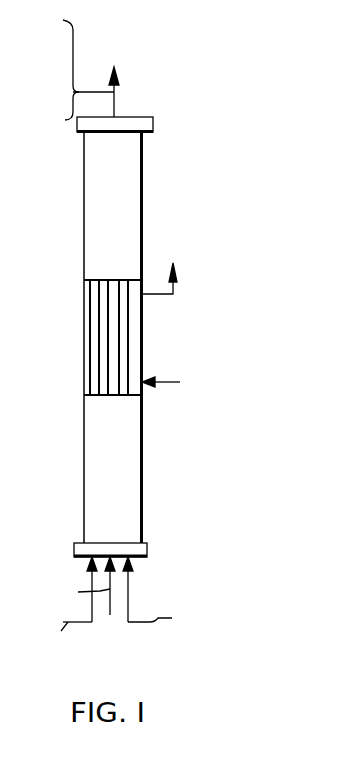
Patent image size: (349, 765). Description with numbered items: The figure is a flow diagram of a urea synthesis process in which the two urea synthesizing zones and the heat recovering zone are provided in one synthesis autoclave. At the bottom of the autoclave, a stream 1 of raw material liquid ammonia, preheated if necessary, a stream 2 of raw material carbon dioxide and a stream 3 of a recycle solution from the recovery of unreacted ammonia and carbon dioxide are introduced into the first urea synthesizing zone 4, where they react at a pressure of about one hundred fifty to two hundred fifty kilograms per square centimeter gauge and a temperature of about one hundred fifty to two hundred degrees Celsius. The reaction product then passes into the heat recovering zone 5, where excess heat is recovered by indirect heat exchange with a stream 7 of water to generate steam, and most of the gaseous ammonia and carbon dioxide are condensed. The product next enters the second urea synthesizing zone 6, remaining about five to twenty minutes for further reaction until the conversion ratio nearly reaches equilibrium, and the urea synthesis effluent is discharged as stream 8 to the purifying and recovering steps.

The stream of raw material liquid ammonia 1 is at (78, 625).
The stream of raw material carbon dioxide 2 is at (112, 615).
The stream of recycle solution 3 is at (145, 625).
The first urea synthesizing zone 4 is at (142, 478).
The heat recovering zone 5 is at (142, 340).
The second urea synthesizing zone 6 is at (142, 210).
The stream of water 7 is at (163, 382).
The stream of urea synthesis effluent 8 is at (114, 102).